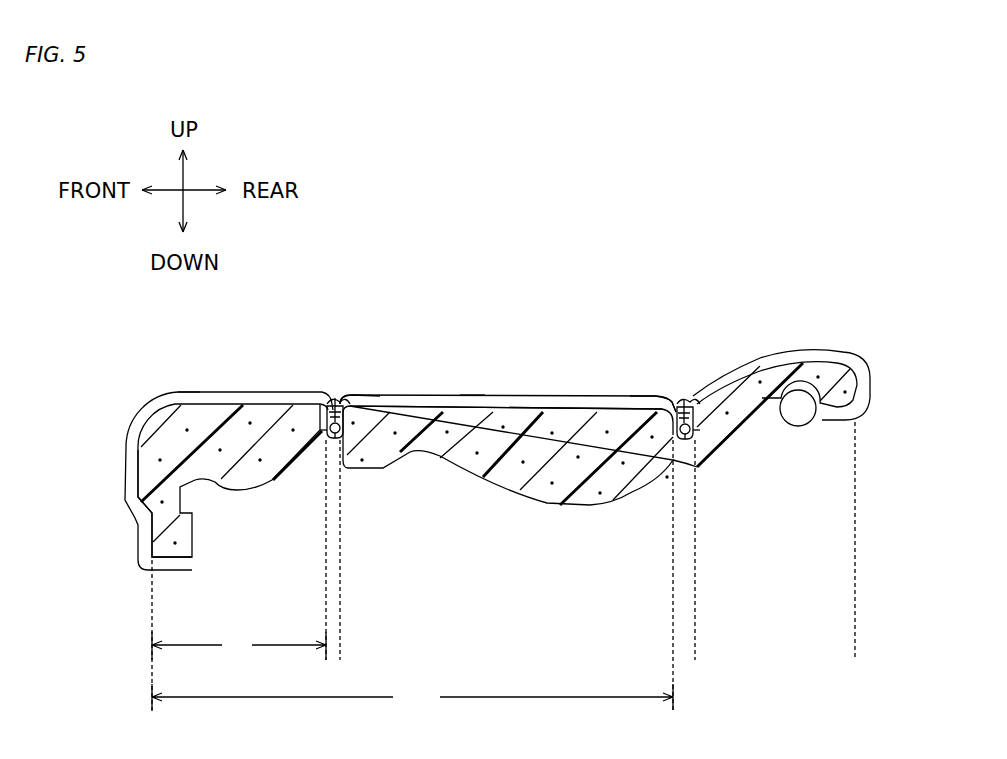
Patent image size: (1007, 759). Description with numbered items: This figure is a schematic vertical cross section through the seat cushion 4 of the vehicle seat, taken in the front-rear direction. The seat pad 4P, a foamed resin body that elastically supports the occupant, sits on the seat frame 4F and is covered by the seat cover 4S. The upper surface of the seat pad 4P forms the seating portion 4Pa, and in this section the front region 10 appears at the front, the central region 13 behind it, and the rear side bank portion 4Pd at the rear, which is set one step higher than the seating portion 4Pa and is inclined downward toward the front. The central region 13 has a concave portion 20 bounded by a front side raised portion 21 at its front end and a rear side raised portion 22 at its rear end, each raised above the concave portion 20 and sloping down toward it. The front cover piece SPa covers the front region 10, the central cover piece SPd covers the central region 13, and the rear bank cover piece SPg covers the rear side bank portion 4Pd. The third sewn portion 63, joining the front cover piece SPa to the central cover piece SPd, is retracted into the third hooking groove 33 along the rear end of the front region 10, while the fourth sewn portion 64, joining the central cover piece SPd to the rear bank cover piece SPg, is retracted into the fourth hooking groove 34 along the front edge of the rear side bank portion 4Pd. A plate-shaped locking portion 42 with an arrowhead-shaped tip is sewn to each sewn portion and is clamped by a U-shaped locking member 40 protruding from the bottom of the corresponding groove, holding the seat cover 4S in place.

The seat cushion 4 is at (590, 265).
The seat cover 4S is at (232, 382).
The front cover piece SPa is at (178, 392).
The seat pad 4P is at (266, 390).
The third sewn portion 63 is at (326, 403).
The locking portion 42 is at (339, 400).
The front side raised portion 21 is at (367, 393).
The central cover piece SPd is at (472, 394).
The concave portion 20 is at (520, 396).
The rear side raised portion 22 is at (658, 392).
The fourth sewn portion 64 is at (664, 402).
The rear bank cover piece SPg is at (796, 352).
The third hooking groove 33 is at (328, 434).
The fourth hooking groove 34 is at (700, 431).
The locking member 40 is at (342, 433).
The seat frame 4F is at (805, 427).
The front region 10 is at (239, 646).
The central region 13 is at (673, 660).
The rear side bank portion 4Pd is at (855, 660).
The seating portion 4Pa is at (412, 697).